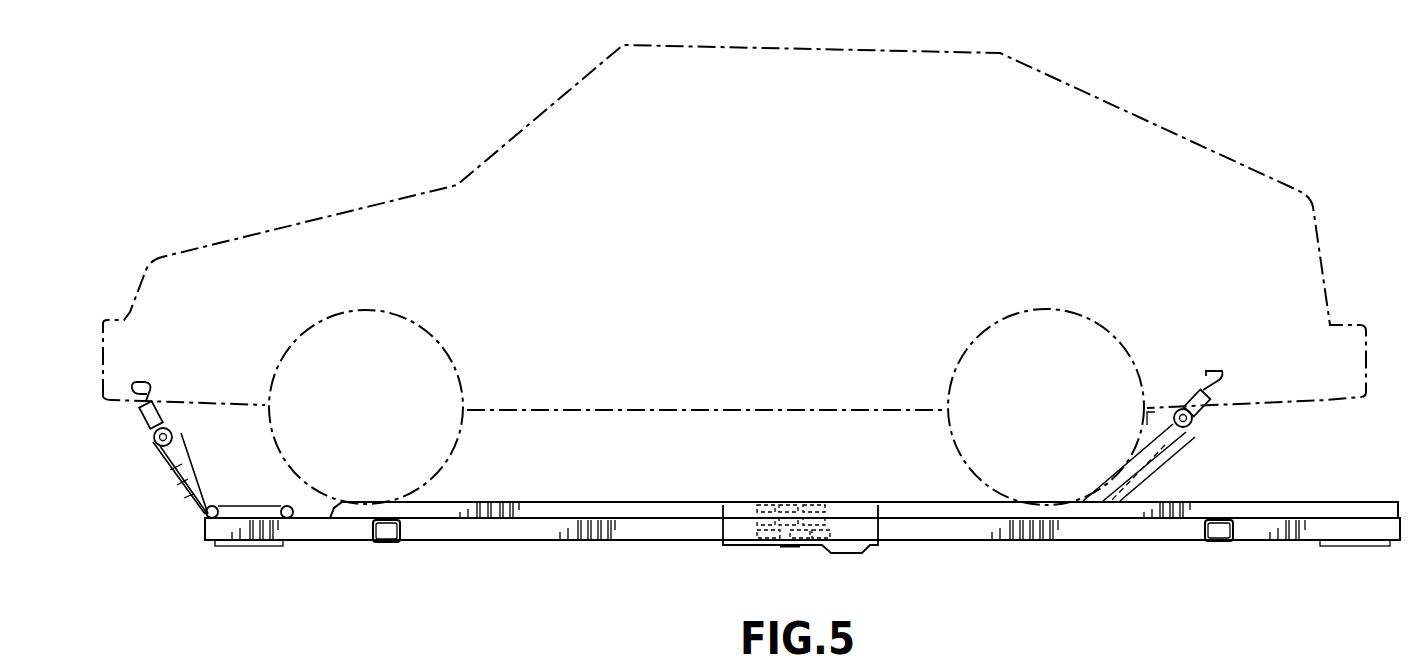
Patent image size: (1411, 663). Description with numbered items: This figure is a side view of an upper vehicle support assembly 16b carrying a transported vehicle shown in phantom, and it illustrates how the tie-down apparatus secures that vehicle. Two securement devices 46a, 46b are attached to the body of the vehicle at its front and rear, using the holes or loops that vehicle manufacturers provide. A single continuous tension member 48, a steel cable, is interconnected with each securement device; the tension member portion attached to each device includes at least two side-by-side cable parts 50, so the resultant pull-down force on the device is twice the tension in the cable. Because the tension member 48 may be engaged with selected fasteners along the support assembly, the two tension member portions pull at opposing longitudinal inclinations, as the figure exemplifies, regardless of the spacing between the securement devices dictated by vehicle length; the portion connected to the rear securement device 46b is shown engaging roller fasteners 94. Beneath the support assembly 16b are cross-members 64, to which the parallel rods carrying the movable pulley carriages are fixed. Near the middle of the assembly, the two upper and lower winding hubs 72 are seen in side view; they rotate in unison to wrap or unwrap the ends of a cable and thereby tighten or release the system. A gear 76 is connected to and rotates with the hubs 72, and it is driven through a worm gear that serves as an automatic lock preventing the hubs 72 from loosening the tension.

The upper vehicle support assembly 16b is at (560, 540).
The securement device 46a is at (1220, 372).
The securement device 46b is at (153, 380).
The tension member 48 is at (1172, 445).
The cable parts 50 is at (182, 468).
The cross-members 64 is at (386, 542).
The winding hubs 72 is at (795, 502).
The gear 76 is at (805, 548).
The roller fasteners 94 is at (212, 505).